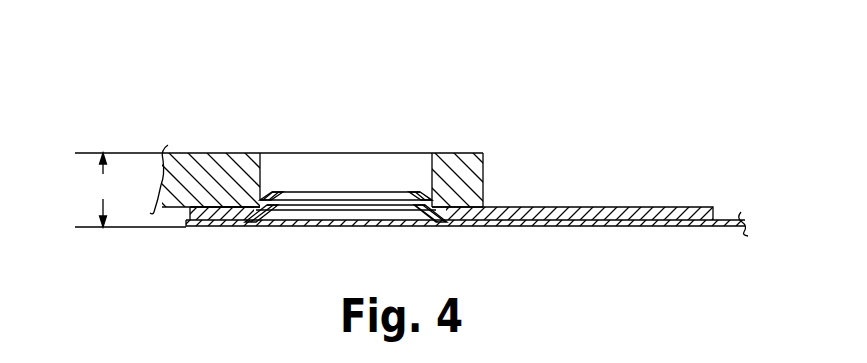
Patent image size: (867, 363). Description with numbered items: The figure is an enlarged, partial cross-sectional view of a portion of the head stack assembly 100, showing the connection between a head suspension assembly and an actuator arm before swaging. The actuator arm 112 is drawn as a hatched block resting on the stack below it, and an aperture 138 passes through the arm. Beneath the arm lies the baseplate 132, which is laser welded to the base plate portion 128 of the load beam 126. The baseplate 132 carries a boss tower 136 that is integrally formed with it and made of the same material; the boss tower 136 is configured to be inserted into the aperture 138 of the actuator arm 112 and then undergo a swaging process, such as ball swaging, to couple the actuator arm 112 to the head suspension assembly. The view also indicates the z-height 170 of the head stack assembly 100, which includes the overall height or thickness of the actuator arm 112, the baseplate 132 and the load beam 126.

The head stack assembly 100 is at (221, 73).
The actuator arm 112 is at (196, 153).
The load beam 126 is at (560, 227).
The base plate portion 128 is at (228, 227).
The baseplate 132 is at (564, 207).
The boss tower 136 is at (422, 190).
The aperture 138 is at (268, 190).
The z-height 170 is at (130, 190).